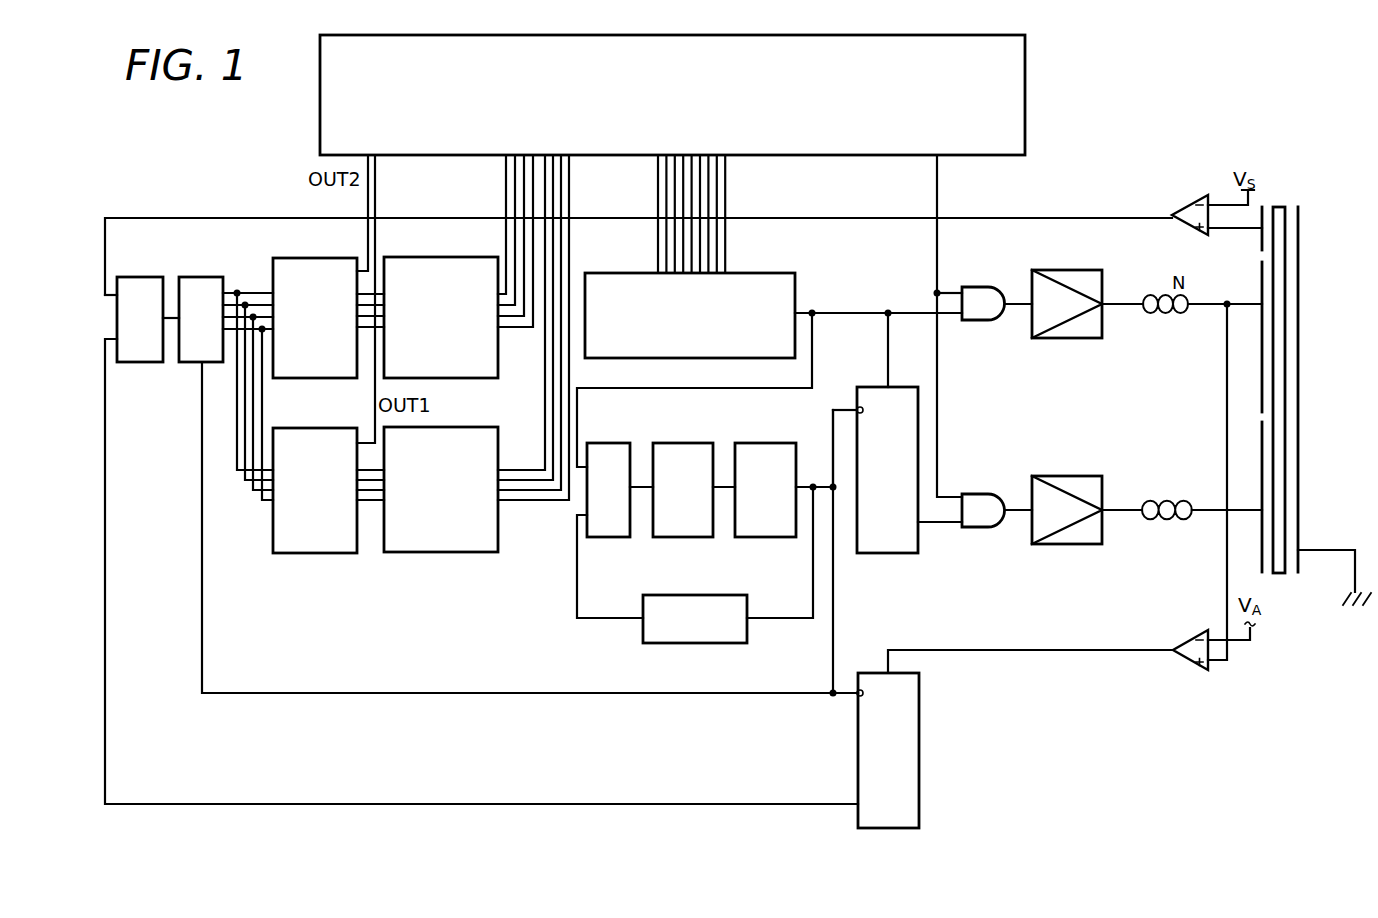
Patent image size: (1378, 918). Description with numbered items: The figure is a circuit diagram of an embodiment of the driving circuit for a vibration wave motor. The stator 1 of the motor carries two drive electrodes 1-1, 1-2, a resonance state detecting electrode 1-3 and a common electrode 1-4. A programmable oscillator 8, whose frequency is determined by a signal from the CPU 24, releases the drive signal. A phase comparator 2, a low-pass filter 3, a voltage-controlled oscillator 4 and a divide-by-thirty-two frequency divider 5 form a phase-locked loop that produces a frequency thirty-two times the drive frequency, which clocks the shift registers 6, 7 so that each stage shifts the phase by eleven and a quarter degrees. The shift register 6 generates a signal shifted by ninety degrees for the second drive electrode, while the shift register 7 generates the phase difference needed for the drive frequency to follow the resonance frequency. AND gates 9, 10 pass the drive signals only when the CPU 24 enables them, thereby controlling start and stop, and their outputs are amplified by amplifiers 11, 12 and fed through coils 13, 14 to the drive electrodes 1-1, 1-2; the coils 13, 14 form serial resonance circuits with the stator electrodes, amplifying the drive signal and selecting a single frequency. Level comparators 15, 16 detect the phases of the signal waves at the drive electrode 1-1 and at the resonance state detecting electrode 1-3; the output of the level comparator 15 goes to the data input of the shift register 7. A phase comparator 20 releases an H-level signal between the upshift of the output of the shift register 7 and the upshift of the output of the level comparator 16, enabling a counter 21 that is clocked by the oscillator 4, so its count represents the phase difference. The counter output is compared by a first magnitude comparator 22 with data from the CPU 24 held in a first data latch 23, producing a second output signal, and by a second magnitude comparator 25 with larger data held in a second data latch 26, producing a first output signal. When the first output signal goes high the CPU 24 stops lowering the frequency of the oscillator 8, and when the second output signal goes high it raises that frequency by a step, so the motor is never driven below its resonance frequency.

The stator 1 is at (1280, 207).
The drive electrode 1-1 is at (1262, 288).
The drive electrode 1-2 is at (1262, 496).
The resonance state detecting electrode 1-3 is at (1262, 245).
The common electrode 1-4 is at (1298, 300).
The phase comparator 2 is at (615, 443).
The low-pass filter 3 is at (700, 443).
The voltage-controlled oscillator 4 is at (785, 443).
The 1/32 frequency divider 5 is at (740, 595).
The shift register 6 is at (905, 387).
The shift register 7 is at (919, 688).
The programmable oscillator 8 is at (795, 282).
The AND gate 9 is at (982, 287).
The AND gate 10 is at (982, 494).
The amplifier 11 is at (1090, 270).
The amplifier 12 is at (1090, 476).
The coil 13 is at (1148, 292).
The coil 14 is at (1158, 498).
The level comparator 15 is at (1196, 634).
The level comparator 16 is at (1196, 200).
The phase comparator 20 is at (152, 277).
The counter 21 is at (215, 277).
The magnitude comparator 22 is at (318, 258).
The data latch 23 is at (452, 257).
The CPU 24 is at (1025, 45).
The second magnitude comparator 25 is at (340, 428).
The second data latch 26 is at (477, 427).